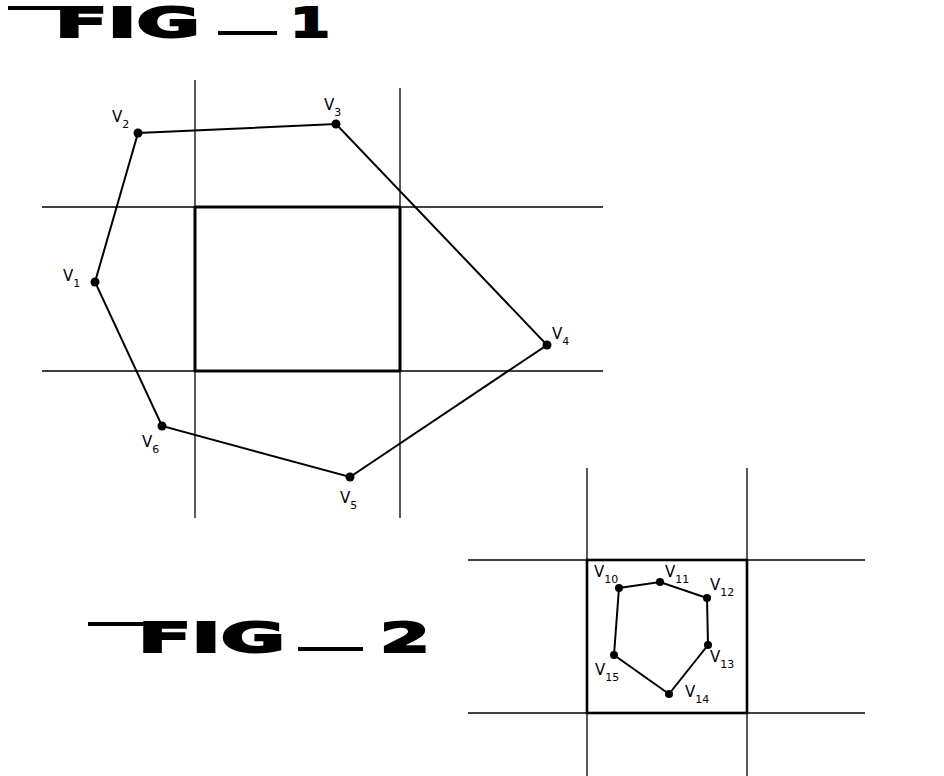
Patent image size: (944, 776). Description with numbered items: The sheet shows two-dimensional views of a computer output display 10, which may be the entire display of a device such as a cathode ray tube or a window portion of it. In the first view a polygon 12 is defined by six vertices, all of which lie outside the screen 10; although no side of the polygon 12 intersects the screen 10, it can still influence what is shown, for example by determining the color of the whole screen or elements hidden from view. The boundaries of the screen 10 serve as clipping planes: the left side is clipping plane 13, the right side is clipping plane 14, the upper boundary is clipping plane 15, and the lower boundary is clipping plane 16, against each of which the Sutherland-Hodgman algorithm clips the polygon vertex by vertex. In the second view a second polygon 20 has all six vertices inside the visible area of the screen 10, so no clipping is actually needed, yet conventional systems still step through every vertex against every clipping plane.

In FIG. 1, the computer output display 10 is at (306, 300).
In FIG. 2, the computer output display 10 is at (750, 624).
In FIG. 1, the polygon 12 is at (481, 272).
In FIG. 1, the clipping plane 13 is at (193, 300).
In FIG. 1, the clipping plane 14 is at (402, 308).
In FIG. 1, the clipping plane 15 is at (239, 206).
In FIG. 1, the clipping plane 16 is at (306, 374).
In FIG. 2, the second polygon 20 is at (673, 641).